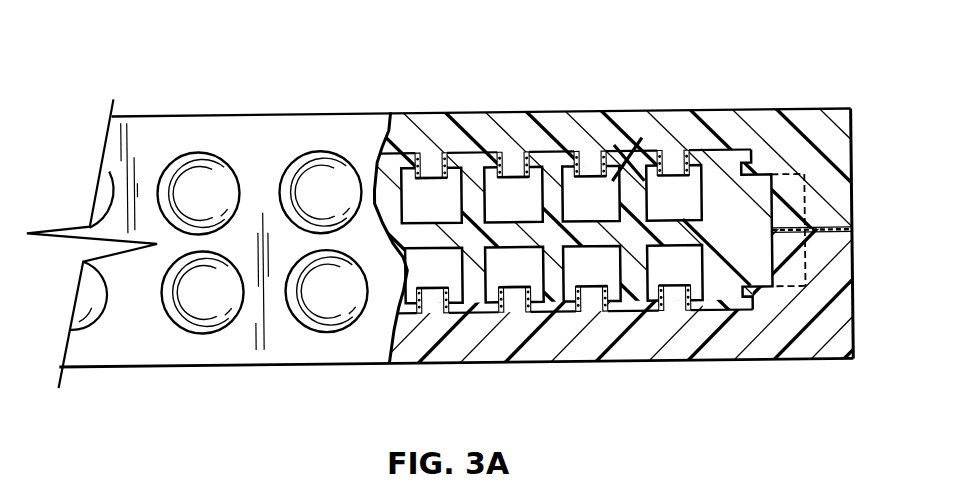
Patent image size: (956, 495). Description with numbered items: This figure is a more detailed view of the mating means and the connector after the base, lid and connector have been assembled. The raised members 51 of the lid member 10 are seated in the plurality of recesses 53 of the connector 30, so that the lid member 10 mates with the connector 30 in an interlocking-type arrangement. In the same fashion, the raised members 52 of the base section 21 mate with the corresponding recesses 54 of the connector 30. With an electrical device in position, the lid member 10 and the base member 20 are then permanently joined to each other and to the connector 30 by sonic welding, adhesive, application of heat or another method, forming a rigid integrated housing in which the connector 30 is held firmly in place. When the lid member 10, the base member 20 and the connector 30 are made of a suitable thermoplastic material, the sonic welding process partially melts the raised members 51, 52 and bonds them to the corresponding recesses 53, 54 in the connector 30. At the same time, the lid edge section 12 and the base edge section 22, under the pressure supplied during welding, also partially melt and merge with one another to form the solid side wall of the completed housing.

The lid member 10 is at (383, 96).
The lid edge section 12 is at (842, 157).
The base member 20 is at (384, 380).
The base section 21 is at (544, 344).
The base edge section 22 is at (843, 303).
The connector 30 is at (728, 210).
The raised members 51 is at (592, 165).
The raised members 52 is at (590, 301).
The recesses 53 is at (648, 160).
The recesses 54 is at (593, 265).